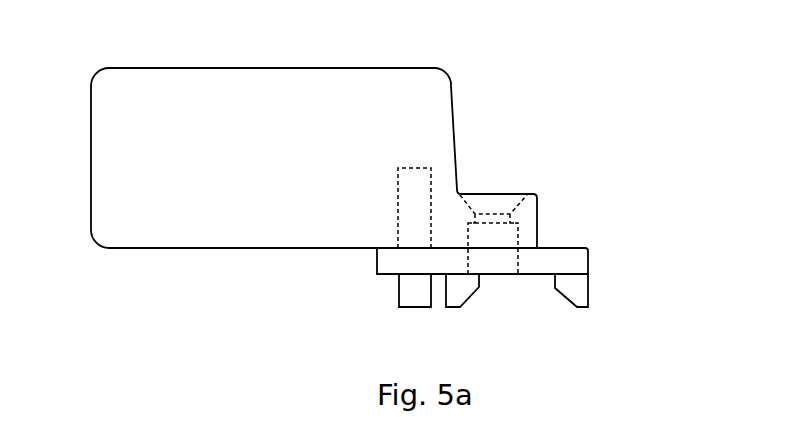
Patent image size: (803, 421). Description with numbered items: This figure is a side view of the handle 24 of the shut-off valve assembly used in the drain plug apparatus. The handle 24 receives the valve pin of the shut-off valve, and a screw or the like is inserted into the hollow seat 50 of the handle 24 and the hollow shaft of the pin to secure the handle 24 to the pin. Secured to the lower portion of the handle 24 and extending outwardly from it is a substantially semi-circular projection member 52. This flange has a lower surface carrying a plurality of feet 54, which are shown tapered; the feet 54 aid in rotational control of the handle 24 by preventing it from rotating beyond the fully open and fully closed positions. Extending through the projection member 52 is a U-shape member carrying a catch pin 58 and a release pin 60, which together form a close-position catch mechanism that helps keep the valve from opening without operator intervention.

The handle 24 is at (110, 35).
The hollow seat 50 is at (518, 240).
The semi-circular projection member 52 is at (588, 262).
The feet 54 is at (588, 290).
The catch pin 58 is at (409, 304).
The release pin 60 is at (431, 182).